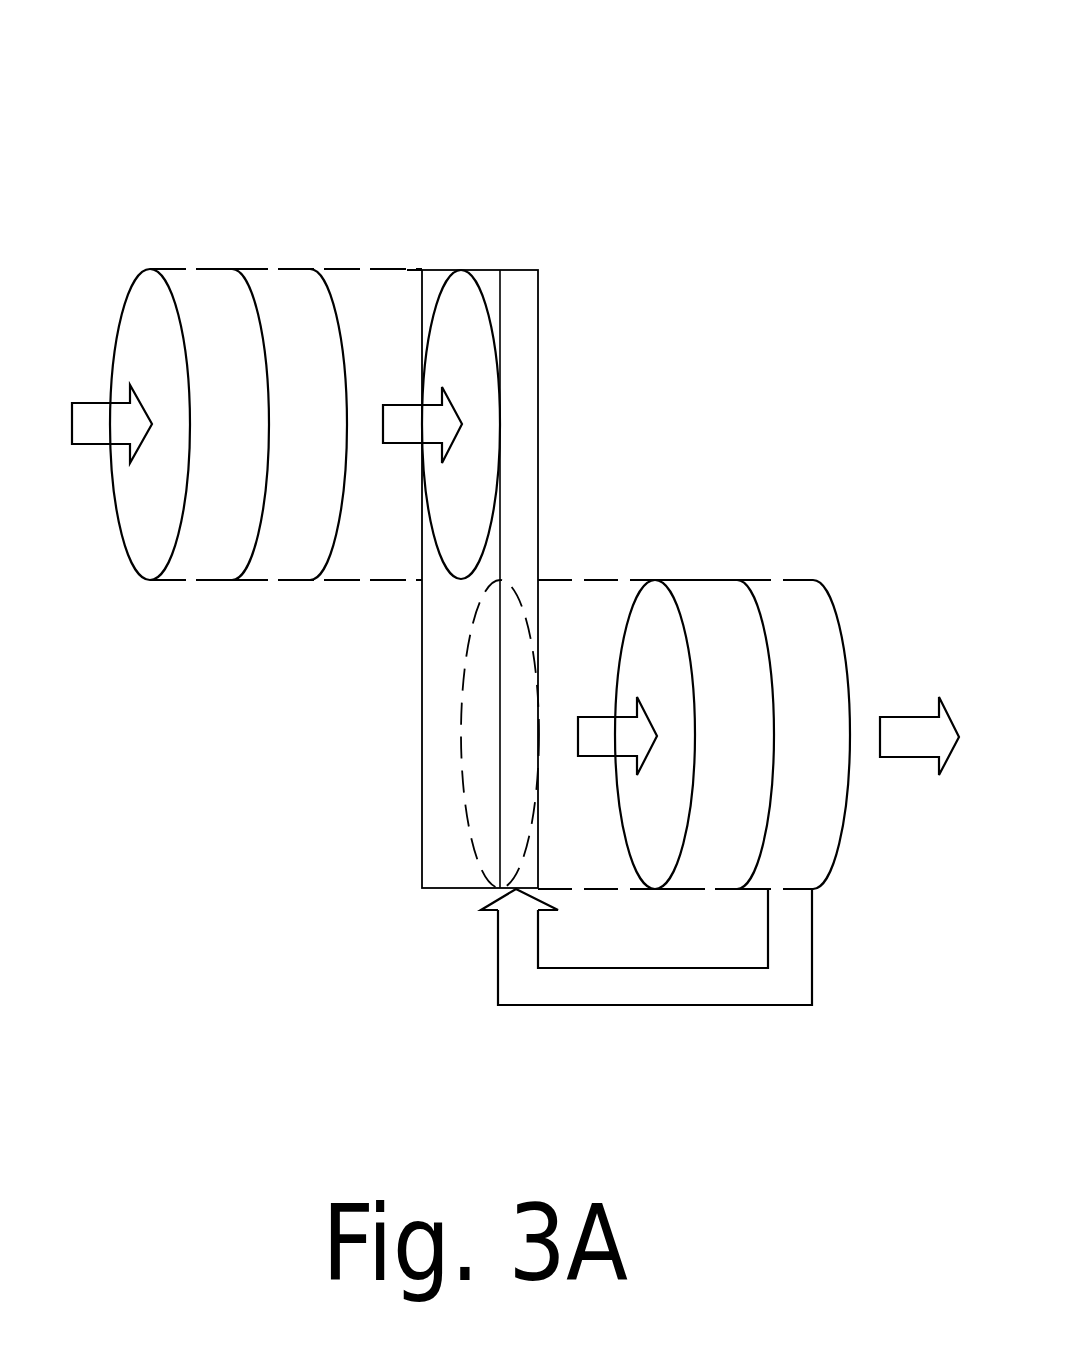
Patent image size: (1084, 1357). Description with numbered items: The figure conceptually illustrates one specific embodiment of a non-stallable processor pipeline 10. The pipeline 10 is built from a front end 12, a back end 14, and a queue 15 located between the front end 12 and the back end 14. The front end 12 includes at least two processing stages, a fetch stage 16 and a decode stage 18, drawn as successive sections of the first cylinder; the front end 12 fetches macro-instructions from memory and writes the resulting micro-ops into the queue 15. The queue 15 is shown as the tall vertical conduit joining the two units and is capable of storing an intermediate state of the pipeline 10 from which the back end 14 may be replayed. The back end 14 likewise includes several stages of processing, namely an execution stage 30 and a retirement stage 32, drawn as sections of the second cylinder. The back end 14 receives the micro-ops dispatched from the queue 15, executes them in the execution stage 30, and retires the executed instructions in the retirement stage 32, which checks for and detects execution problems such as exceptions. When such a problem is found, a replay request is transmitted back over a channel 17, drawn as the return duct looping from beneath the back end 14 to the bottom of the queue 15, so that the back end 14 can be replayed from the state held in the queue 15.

The non-stallable processor pipeline 10 is at (497, 72).
The front end 12 is at (247, 337).
The back end 14 is at (748, 639).
The queue 15 is at (461, 270).
The fetch stage 16 is at (170, 269).
The channel 17 is at (708, 1007).
The decode stage 18 is at (327, 386).
The execution stage 30 is at (695, 580).
The retirement stage 32 is at (793, 697).